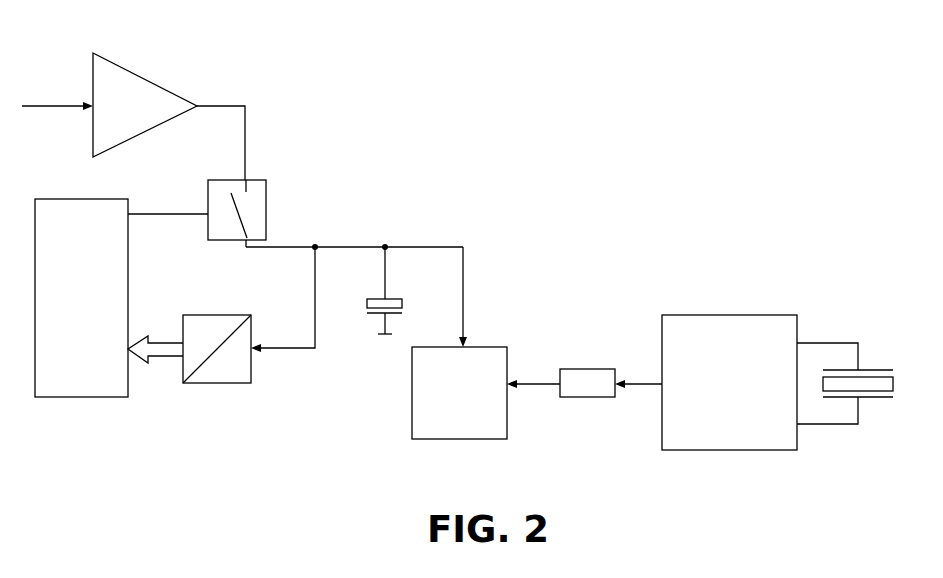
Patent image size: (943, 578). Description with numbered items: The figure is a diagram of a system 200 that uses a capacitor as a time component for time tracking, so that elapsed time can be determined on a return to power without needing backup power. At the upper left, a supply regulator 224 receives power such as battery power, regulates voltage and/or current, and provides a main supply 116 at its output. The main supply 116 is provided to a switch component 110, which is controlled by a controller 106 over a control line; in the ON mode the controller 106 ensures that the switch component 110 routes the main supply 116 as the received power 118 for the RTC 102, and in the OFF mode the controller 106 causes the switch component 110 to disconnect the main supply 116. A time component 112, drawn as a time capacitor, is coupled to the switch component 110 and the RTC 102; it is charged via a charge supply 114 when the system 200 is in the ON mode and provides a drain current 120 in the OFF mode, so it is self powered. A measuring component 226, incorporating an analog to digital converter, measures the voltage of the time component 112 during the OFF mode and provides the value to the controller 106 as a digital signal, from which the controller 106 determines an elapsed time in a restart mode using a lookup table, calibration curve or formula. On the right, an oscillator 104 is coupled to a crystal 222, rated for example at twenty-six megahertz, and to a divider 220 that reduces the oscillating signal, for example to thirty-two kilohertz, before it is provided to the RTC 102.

The system 200 is at (249, 507).
The supply regulator 224 is at (109, 94).
The main supply 116 is at (222, 106).
The switch component 110 is at (284, 164).
The controller 106 is at (121, 293).
The measuring component 226 is at (196, 384).
The time component 112 is at (368, 360).
The charge supply 114 is at (409, 290).
The drain current 120 is at (386, 263).
The received power 118 is at (463, 280).
The RTC 102 is at (486, 382).
The divider 220 is at (573, 397).
The oscillator 104 is at (711, 315).
The crystal 222 is at (836, 458).